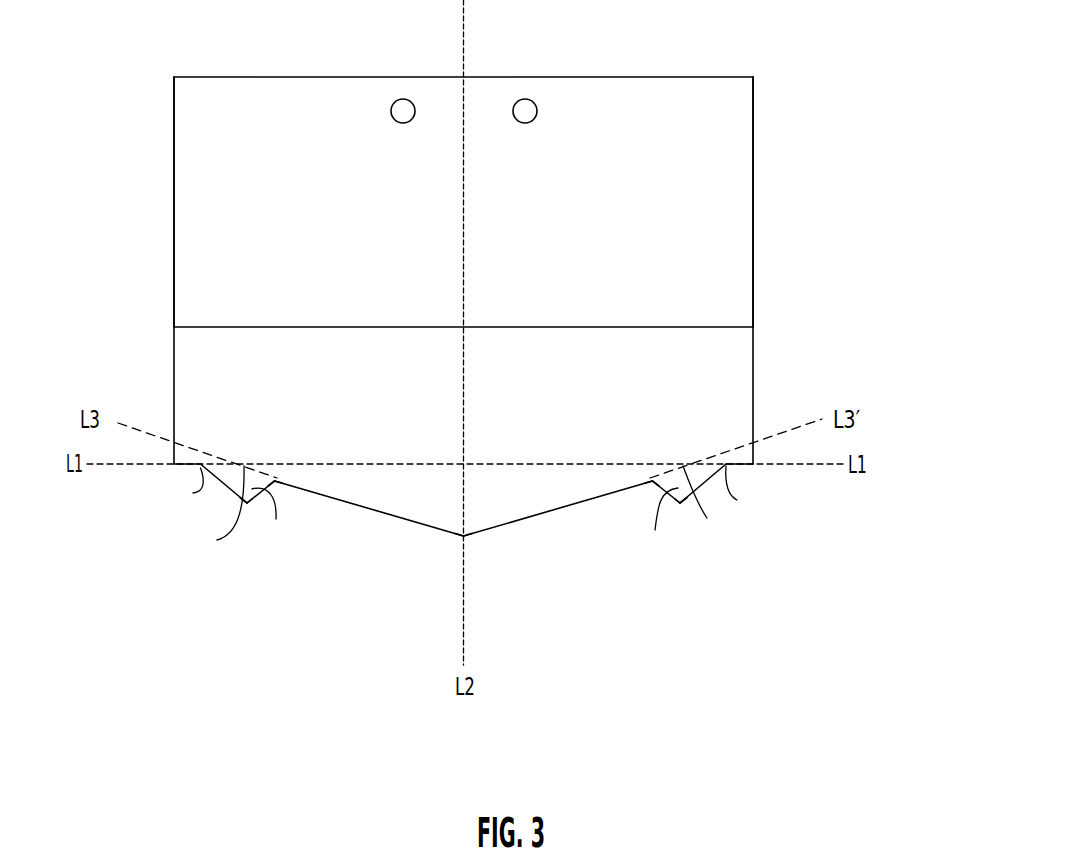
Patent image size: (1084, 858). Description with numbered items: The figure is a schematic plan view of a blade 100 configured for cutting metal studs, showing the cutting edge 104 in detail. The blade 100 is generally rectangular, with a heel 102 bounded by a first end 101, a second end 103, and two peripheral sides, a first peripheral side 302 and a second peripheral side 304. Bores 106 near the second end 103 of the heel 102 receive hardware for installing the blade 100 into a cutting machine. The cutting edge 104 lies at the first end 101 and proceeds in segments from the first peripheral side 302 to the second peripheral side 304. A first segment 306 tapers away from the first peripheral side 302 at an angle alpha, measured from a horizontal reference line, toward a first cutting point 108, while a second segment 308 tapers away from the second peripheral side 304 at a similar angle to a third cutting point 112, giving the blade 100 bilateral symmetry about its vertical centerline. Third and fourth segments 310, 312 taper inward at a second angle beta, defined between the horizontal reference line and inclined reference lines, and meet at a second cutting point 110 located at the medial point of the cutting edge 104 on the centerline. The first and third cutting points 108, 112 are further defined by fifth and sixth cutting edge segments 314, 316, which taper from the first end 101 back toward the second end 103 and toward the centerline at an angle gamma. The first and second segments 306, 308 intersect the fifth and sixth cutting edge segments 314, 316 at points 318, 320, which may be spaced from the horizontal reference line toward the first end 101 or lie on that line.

The blade 100 is at (876, 234).
The first end 101 is at (857, 433).
The heel 102 is at (553, 198).
The second end 103 is at (762, 107).
The cutting edge 104 is at (743, 465).
The bores 106 is at (405, 99).
The first cutting point 108 is at (248, 504).
The second cutting point 110 is at (464, 533).
The third cutting point 112 is at (681, 505).
The first peripheral side 302 is at (174, 190).
The second peripheral side 304 is at (754, 188).
The first segment 306 is at (222, 485).
The second segment 308 is at (708, 480).
The third segment 310 is at (397, 516).
The fourth segment 312 is at (532, 516).
The fifth cutting edge segment 314 is at (268, 490).
The sixth cutting edge segment 316 is at (650, 481).
The point 318 is at (250, 498).
The point 320 is at (653, 480).